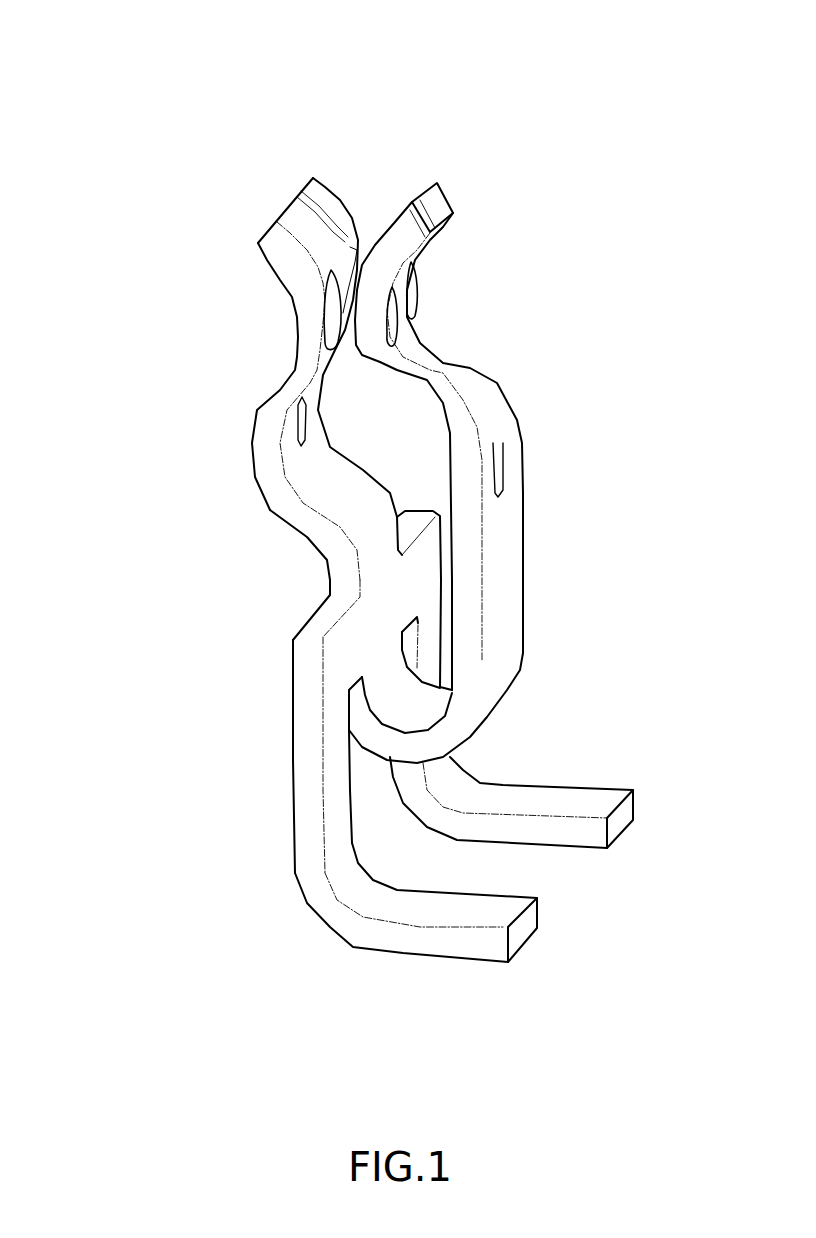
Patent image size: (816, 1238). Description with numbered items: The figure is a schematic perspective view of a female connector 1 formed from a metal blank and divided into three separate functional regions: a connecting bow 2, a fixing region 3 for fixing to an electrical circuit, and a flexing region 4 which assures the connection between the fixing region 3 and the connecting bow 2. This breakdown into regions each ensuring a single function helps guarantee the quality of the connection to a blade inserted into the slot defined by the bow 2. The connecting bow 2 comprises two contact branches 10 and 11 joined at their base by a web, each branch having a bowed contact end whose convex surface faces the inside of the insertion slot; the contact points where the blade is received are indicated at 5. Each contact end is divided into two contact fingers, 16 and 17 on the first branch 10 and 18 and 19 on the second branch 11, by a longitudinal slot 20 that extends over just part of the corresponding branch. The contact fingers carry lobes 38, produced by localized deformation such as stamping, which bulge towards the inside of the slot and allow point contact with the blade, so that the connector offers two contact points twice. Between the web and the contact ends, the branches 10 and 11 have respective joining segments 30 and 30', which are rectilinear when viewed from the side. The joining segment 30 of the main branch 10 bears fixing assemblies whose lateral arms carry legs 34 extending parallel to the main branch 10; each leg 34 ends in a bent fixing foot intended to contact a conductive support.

The female connector 1 is at (358, 531).
The connecting bow 2 is at (410, 390).
The fixing region 3 is at (464, 900).
The flexing region 4 is at (375, 840).
The contact point 5 is at (385, 182).
The contact branch 10 is at (252, 299).
The contact branch 11 is at (496, 341).
The contact finger 16 is at (210, 216).
The contact finger 17 is at (300, 130).
The contact finger 18 is at (492, 234).
The contact finger 19 is at (499, 191).
The longitudinal slot 20 is at (403, 443).
The joining segment 30 is at (288, 600).
The joining segment 30' is at (491, 660).
The leg 34 is at (275, 755).
The lobe 38 is at (300, 241).